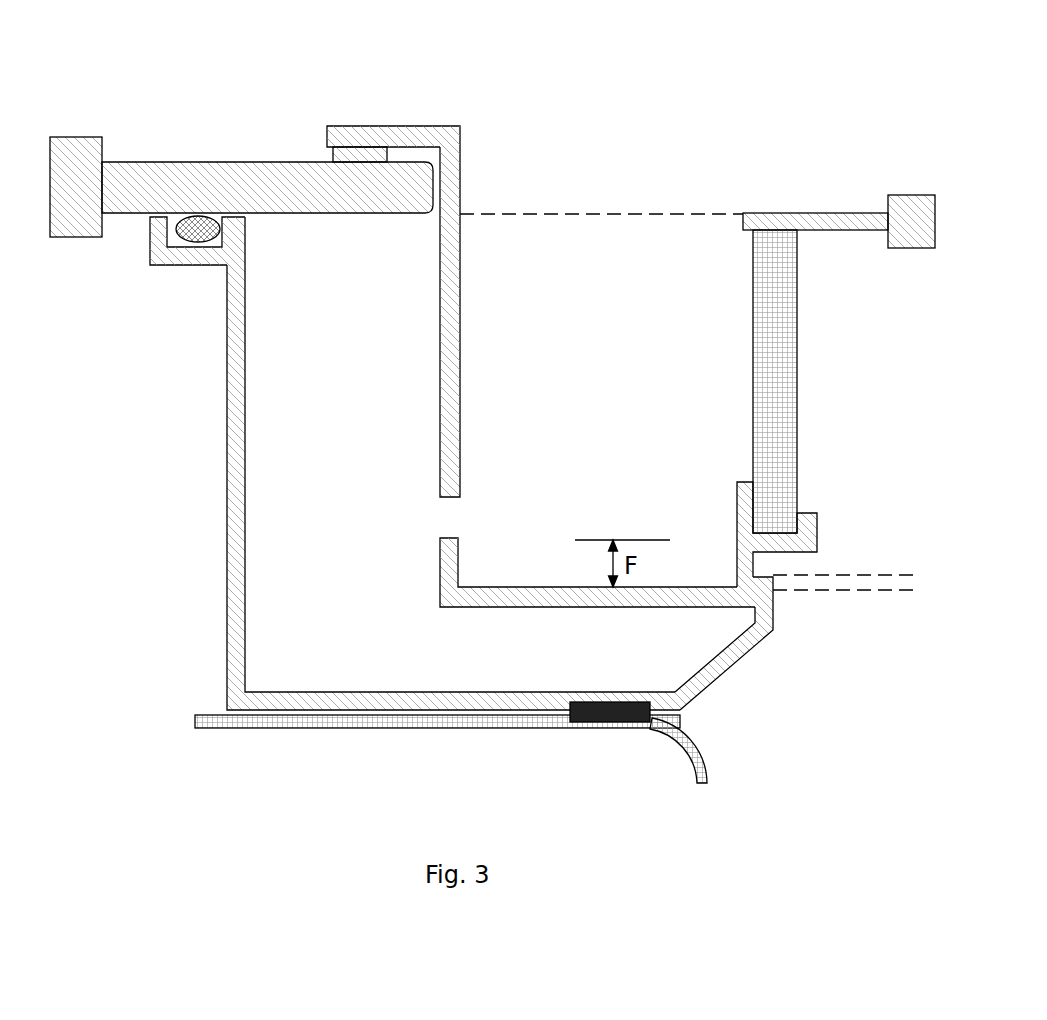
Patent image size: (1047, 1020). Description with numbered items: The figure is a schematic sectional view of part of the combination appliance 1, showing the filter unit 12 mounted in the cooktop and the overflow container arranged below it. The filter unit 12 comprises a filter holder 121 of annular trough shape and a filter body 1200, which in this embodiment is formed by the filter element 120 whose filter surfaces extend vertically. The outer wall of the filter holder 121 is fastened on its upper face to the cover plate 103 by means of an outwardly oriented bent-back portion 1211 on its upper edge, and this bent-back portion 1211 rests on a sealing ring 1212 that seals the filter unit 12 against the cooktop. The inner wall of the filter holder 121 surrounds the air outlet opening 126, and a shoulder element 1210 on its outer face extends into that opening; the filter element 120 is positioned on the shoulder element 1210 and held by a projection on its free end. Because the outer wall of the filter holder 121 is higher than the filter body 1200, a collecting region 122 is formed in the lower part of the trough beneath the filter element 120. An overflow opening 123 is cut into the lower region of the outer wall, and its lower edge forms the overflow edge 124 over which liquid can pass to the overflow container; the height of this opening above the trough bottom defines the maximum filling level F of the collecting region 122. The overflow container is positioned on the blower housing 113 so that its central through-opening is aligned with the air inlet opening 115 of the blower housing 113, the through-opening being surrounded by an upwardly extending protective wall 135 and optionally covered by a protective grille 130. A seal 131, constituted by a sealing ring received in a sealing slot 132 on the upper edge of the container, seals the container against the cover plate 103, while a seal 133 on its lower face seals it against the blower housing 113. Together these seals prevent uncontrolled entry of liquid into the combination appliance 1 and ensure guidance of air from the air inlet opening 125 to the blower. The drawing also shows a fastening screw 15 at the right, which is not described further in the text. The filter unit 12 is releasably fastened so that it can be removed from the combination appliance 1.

The combination appliance 1 is at (100, 112).
The filter unit 12 is at (955, 102).
The fastening screw 15 is at (825, 212).
The cover plate 103 is at (243, 170).
The blower housing 113 is at (210, 718).
The air inlet opening 115 is at (690, 745).
The filter element 120 is at (795, 370).
The filter holder 121 is at (505, 133).
The collecting region 122 is at (508, 567).
The overflow opening 123 is at (440, 505).
The overflow edge 124 is at (455, 538).
The air inlet opening 125 is at (633, 212).
The air outlet opening 126 is at (938, 590).
The protective grille 130 is at (848, 578).
The seal 131 is at (198, 235).
The sealing slot 132 is at (150, 250).
The seal 133 is at (600, 722).
The protective wall 135 is at (722, 660).
The filter body 1200 is at (843, 295).
The shoulder element 1210 is at (797, 541).
The bent-back portion 1211 is at (403, 133).
The sealing ring 1212 is at (362, 152).